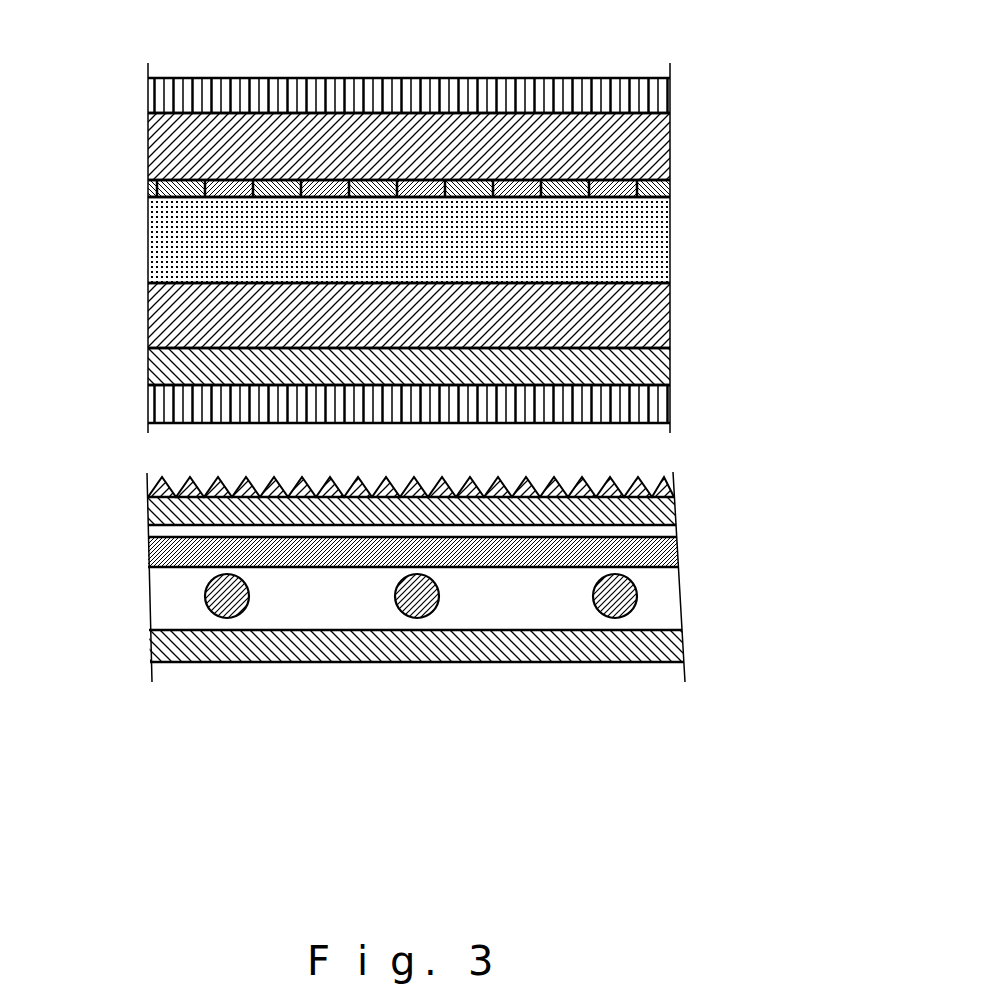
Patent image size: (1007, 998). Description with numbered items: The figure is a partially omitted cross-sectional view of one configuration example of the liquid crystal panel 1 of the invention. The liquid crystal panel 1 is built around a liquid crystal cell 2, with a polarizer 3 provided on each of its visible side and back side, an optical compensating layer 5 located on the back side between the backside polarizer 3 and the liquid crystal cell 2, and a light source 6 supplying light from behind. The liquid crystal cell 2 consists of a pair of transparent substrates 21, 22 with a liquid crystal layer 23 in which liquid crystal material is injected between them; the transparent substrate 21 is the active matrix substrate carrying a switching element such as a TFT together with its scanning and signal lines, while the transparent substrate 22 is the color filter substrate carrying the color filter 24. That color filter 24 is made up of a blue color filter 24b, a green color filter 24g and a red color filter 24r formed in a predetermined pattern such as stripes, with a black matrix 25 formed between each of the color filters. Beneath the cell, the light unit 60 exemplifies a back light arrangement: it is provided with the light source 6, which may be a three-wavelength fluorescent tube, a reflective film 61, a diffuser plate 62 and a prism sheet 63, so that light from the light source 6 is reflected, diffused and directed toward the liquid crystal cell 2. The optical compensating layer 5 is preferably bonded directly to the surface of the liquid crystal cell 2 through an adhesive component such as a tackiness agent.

The liquid crystal panel 1 is at (825, 503).
The liquid crystal cell 2 is at (92, 113).
The polarizer 3 is at (292, 94).
The optical compensating layer 5 is at (158, 368).
The light source 6 is at (397, 603).
The transparent substrate 21 is at (167, 320).
The transparent substrate 22 is at (178, 153).
The liquid crystal layer 23 is at (163, 238).
The color filter 24 is at (787, 222).
The blue color filter 24b is at (622, 190).
The green color filter 24g is at (520, 189).
The red color filter 24r is at (428, 188).
The black matrix 25 is at (474, 181).
The light unit 60 is at (705, 473).
The reflective film 61 is at (167, 647).
The diffuser plate 62 is at (167, 550).
The prism sheet 63 is at (167, 518).